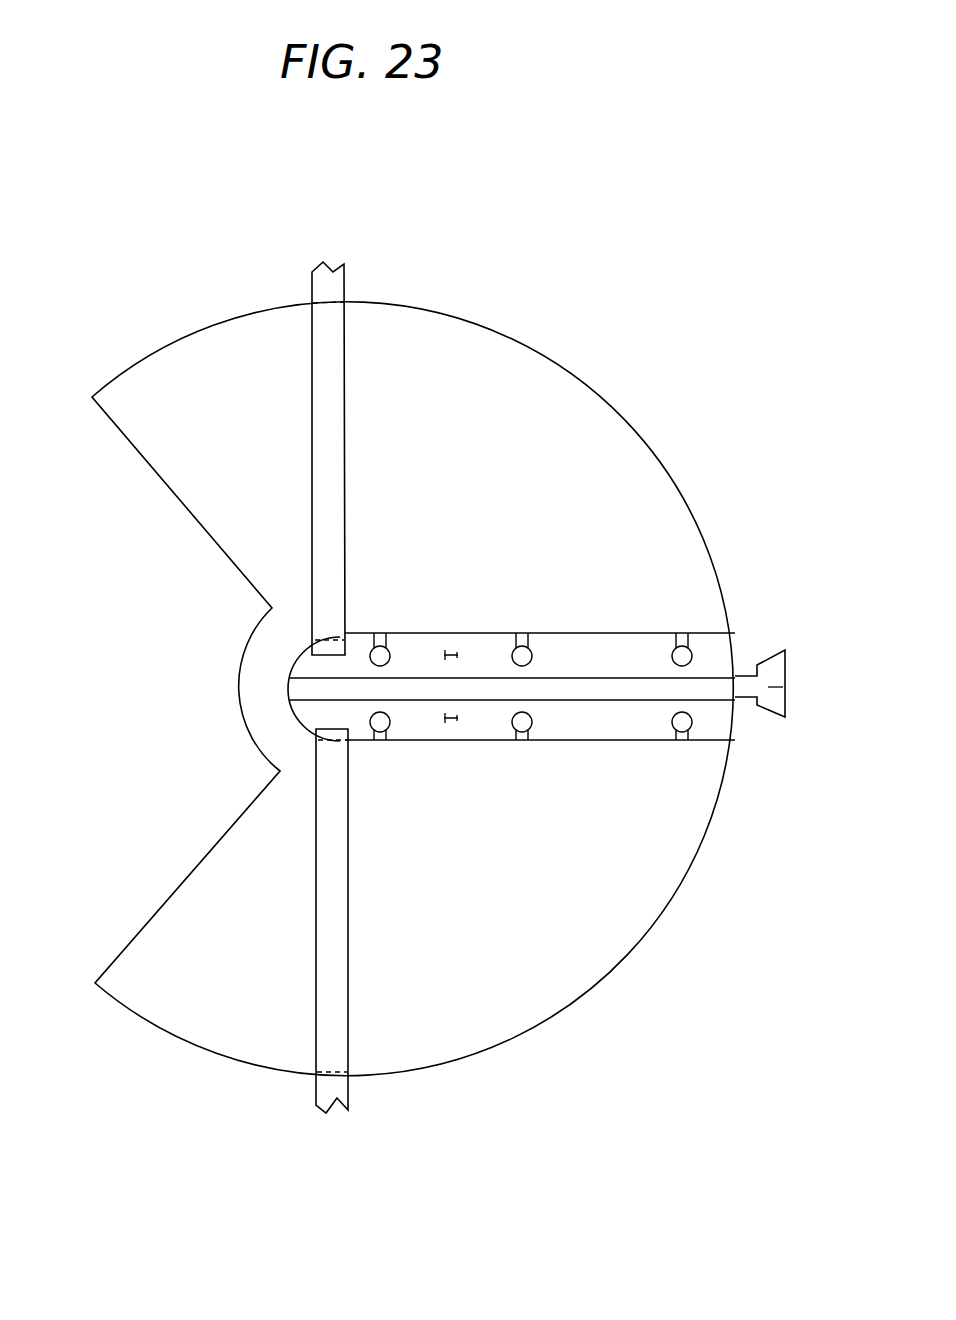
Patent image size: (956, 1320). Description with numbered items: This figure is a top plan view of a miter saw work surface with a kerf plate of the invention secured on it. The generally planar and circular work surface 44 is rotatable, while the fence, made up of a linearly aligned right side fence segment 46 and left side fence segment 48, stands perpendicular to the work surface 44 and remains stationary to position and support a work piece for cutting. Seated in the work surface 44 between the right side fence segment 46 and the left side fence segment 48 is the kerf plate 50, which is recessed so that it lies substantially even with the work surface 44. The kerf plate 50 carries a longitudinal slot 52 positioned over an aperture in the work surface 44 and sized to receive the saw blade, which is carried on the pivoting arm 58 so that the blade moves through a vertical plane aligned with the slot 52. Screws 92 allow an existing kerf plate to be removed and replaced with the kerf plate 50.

The work surface 44 is at (572, 415).
The right side fence segment 46 is at (318, 318).
The left side fence segment 48 is at (316, 1078).
The kerf plate 50 is at (720, 642).
The longitudinal slot 52 is at (338, 695).
The arm 58 is at (785, 683).
The screws 92 is at (677, 648).